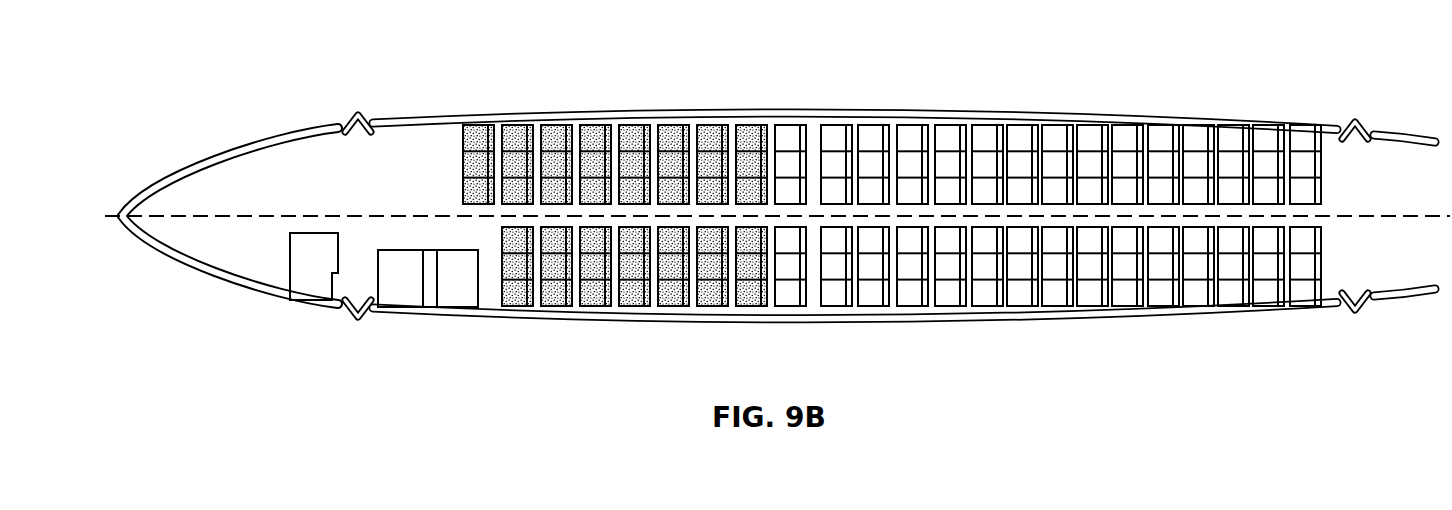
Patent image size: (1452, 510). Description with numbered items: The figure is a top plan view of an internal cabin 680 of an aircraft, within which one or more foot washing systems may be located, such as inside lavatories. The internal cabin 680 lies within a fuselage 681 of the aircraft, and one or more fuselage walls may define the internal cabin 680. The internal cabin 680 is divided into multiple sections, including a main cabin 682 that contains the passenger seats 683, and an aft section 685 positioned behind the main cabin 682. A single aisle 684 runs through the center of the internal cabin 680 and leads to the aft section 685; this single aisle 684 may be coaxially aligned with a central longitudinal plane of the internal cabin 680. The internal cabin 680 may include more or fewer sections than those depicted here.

The internal cabin 680 is at (375, 54).
The fuselage 681 is at (582, 113).
The main cabin 682 is at (515, 142).
The passenger seats 683 is at (788, 145).
The single aisle 684 is at (908, 210).
The aft section 685 is at (1338, 148).